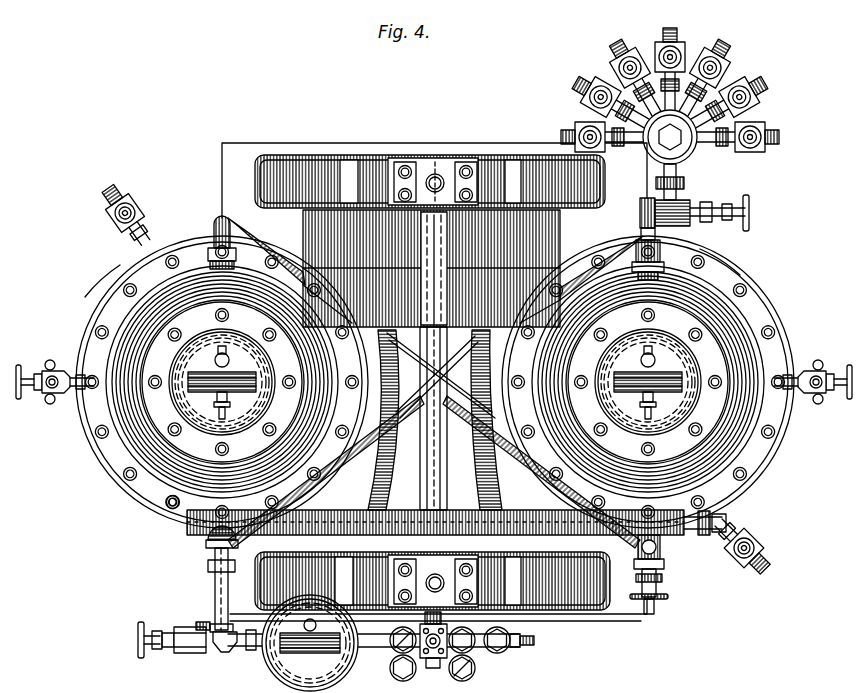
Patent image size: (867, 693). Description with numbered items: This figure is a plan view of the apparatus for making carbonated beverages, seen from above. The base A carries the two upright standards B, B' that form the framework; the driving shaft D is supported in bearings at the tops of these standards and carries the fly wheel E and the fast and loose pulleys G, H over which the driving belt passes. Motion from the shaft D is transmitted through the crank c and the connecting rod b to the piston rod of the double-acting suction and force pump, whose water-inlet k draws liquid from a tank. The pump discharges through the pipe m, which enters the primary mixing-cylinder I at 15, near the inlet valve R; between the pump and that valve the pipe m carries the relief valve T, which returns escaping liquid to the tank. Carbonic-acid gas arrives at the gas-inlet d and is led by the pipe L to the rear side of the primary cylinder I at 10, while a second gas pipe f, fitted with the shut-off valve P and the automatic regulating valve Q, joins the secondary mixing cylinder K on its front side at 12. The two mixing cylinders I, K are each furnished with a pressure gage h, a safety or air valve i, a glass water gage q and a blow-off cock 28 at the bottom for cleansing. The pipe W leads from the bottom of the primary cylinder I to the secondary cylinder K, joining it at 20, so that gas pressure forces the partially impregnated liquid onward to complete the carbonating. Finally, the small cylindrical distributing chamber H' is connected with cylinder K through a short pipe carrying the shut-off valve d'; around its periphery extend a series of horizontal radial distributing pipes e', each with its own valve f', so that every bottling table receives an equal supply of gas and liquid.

The base A is at (228, 157).
The upright standard B' is at (430, 163).
The upright standard B is at (432, 603).
The fast pulley G is at (305, 232).
The gas pipe L is at (212, 238).
The blow-off cock 28 is at (106, 216).
The gas pipe connection 10 is at (140, 262).
The transfer pipe connection 20 is at (708, 246).
The water pipe connection 15 is at (170, 512).
The primary mixing-cylinder I is at (145, 355).
The secondary mixing cylinder K is at (744, 318).
The glass water gage q is at (58, 398).
The pressure gage h is at (200, 386).
The safety or air valve i is at (212, 430).
The inlet valve R is at (212, 546).
The discharge pipe m is at (214, 592).
The relief valve T is at (136, 640).
The fly wheel E is at (400, 514).
The driving shaft D is at (447, 485).
The loose pulley H is at (434, 439).
The transfer pipe W is at (604, 262).
The radial distributing pipe e' is at (691, 77).
The valve f' is at (670, 97).
The distributing chamber H' is at (695, 146).
The shut off valve d' is at (705, 222).
The gas pipe connection 12 is at (636, 552).
The gas pipe f is at (703, 546).
The shut-off valve P is at (664, 588).
The automatic regulating valve Q is at (700, 540).
The water-inlet k is at (530, 642).
The connecting rod b is at (477, 672).
The crank c is at (398, 656).
The gas-inlet d is at (439, 652).